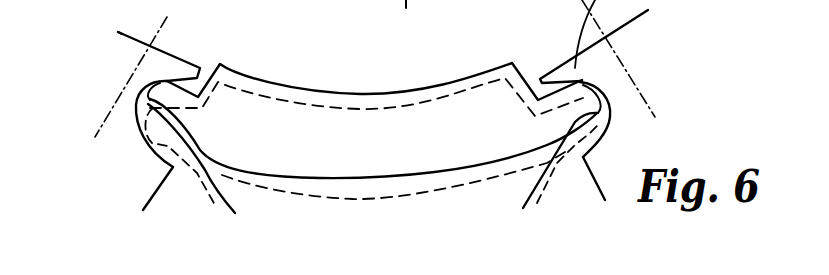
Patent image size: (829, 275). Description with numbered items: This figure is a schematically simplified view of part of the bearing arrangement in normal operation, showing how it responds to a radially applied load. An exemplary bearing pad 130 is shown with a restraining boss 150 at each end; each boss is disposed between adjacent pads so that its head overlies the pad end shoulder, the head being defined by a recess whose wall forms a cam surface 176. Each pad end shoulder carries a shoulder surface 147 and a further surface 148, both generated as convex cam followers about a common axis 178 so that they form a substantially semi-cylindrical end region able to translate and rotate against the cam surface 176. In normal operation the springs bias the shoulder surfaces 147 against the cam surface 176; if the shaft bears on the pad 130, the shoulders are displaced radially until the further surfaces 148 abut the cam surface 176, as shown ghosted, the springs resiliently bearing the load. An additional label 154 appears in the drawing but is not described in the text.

The clamping jaw 154 is at (122, 33).
The cam surface 176 is at (167, 81).
The bearing pad 130 is at (432, 88).
The shoulder surface 147 is at (694, 113).
The further surface 148 is at (549, 207).
The restraining boss 150 is at (123, 183).
The common axis 178 is at (358, 0).